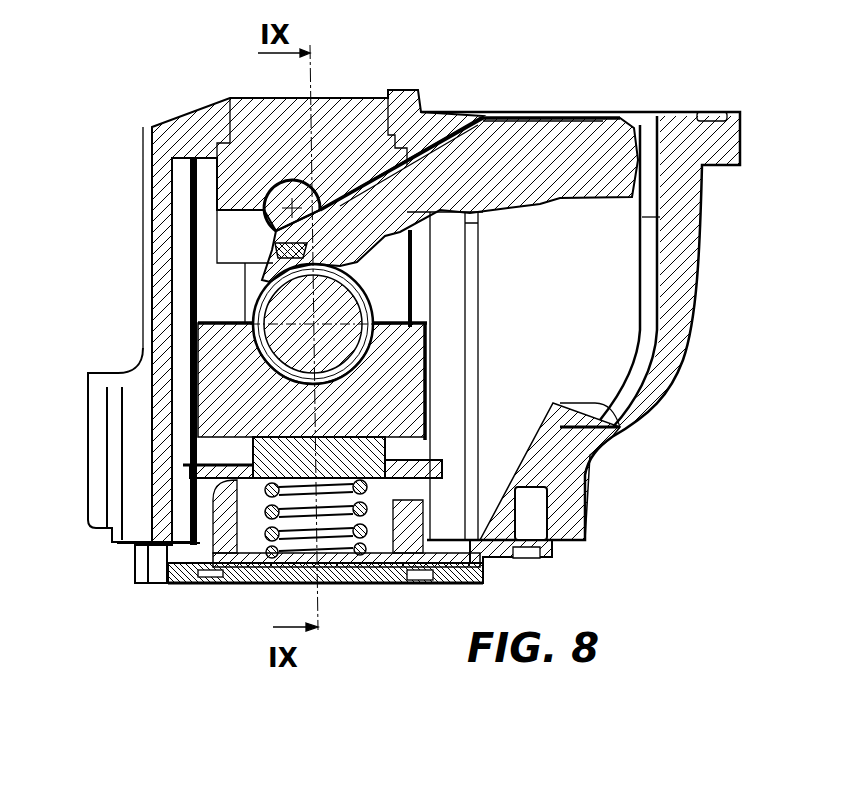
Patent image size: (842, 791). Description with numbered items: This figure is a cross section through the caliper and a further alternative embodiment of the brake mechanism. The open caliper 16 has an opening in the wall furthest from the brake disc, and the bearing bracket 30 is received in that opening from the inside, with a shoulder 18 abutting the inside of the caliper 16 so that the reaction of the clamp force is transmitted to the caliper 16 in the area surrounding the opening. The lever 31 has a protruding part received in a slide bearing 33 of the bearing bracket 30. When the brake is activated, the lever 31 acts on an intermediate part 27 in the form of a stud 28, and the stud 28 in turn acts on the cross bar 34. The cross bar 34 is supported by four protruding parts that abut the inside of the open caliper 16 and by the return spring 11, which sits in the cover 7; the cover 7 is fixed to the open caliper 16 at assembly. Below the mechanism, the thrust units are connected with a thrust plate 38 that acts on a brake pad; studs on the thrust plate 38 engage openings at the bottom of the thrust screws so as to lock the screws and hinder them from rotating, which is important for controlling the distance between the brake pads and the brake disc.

The cover 7 is at (480, 560).
The return spring 11 is at (253, 567).
The caliper 16 is at (700, 217).
The shoulder 18 is at (223, 147).
The intermediate part 27 is at (277, 315).
The stud 28 is at (209, 324).
The bearing bracket 30 is at (367, 108).
The lever 31 is at (535, 135).
The slide bearing 33 is at (291, 180).
The cross bar 34 is at (225, 372).
The thrust plate 38 is at (373, 583).